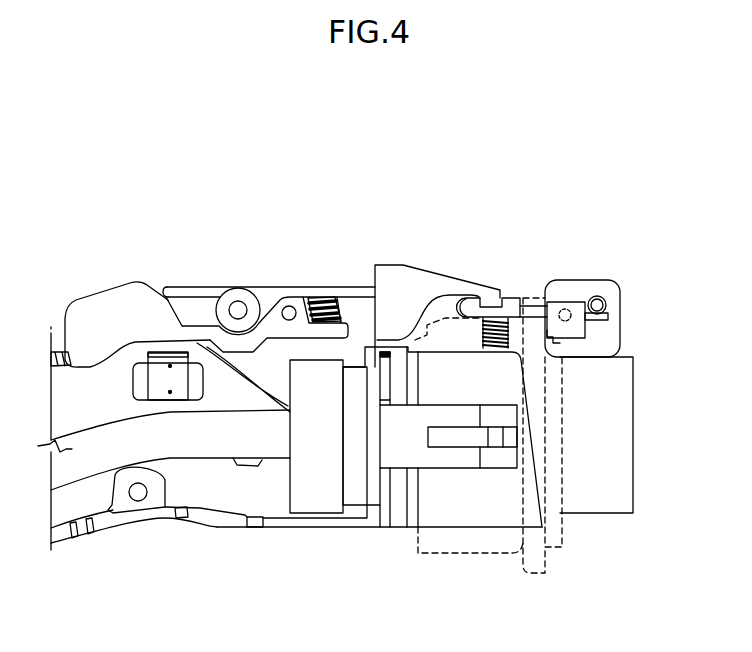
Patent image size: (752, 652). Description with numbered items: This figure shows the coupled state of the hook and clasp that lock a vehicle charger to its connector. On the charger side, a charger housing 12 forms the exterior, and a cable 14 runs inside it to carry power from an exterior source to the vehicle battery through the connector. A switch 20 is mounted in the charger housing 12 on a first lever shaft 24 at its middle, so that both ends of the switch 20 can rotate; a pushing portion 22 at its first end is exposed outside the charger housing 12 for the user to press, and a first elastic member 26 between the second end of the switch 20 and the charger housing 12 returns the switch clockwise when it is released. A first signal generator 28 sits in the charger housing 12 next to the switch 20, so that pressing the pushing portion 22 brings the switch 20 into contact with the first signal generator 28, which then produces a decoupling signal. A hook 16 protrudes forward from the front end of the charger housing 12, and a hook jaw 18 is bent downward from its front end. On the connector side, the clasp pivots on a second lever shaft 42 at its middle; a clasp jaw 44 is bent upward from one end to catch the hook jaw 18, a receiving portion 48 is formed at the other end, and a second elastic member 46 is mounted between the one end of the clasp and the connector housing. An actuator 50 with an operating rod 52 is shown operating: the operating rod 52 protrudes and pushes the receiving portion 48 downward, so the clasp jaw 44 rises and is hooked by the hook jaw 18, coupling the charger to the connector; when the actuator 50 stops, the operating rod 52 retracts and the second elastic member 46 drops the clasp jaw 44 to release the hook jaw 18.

The charger housing 12 is at (213, 520).
The cable 14 is at (167, 443).
The hook 16 is at (440, 283).
The hook jaw 18 is at (498, 297).
The switch 20 is at (273, 301).
The pushing portion 22 is at (110, 308).
The first lever shaft 24 is at (289, 305).
The first elastic member 26 is at (321, 296).
The first signal generator 28 is at (160, 385).
The second lever shaft 42 is at (593, 321).
The clasp jaw 44 is at (470, 301).
The second elastic member 46 is at (513, 323).
The receiving portion 48 is at (610, 314).
The actuator 50 is at (580, 290).
The operating rod 52 is at (602, 299).